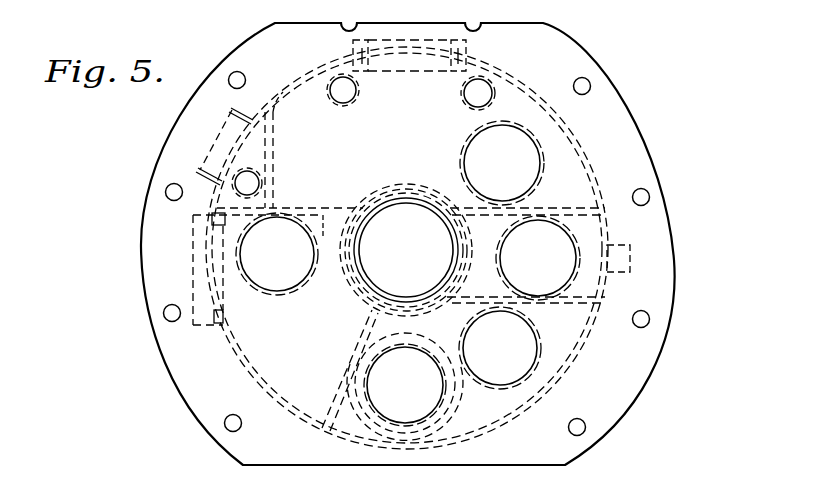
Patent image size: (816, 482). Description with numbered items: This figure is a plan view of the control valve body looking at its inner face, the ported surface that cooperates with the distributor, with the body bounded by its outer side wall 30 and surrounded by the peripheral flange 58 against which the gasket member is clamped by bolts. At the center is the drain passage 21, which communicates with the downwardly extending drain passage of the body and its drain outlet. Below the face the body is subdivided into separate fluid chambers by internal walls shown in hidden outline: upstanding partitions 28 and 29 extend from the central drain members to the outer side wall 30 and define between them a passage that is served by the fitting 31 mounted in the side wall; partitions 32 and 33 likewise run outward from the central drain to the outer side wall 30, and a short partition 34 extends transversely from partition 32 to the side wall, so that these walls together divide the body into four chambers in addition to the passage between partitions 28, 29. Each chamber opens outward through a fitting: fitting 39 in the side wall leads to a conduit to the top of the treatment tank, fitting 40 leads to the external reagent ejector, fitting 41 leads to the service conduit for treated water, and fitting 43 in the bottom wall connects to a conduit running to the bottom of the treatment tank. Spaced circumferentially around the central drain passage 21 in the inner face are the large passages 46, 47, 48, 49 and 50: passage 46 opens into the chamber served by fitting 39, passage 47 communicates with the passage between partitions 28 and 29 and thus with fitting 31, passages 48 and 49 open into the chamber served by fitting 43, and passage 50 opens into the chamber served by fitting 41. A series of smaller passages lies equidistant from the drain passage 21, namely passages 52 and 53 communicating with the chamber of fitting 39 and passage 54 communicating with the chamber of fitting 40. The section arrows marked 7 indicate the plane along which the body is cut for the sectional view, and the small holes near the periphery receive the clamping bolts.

The section line 7- 7 is at (400, 6).
The drain passage 21 is at (380, 230).
The partition 28 is at (528, 208).
The partition 29 is at (536, 303).
The outer side wall 30 is at (596, 166).
The fitting 31 is at (617, 246).
The partition 32 is at (278, 229).
The partition 33 is at (330, 398).
The short partition 34 is at (277, 127).
The fitting 39 is at (468, 58).
The fitting 40 is at (232, 107).
The fitting 41 is at (194, 332).
The fitting 43 is at (455, 425).
The passage 46 is at (497, 140).
The passage 47 is at (562, 251).
The passage 48 is at (527, 349).
The passage 49 is at (440, 403).
The passage 50 is at (261, 271).
The passage 52 is at (357, 91).
The passage 53 is at (474, 102).
The passage 54 is at (243, 192).
The peripheral flange 58 is at (630, 375).